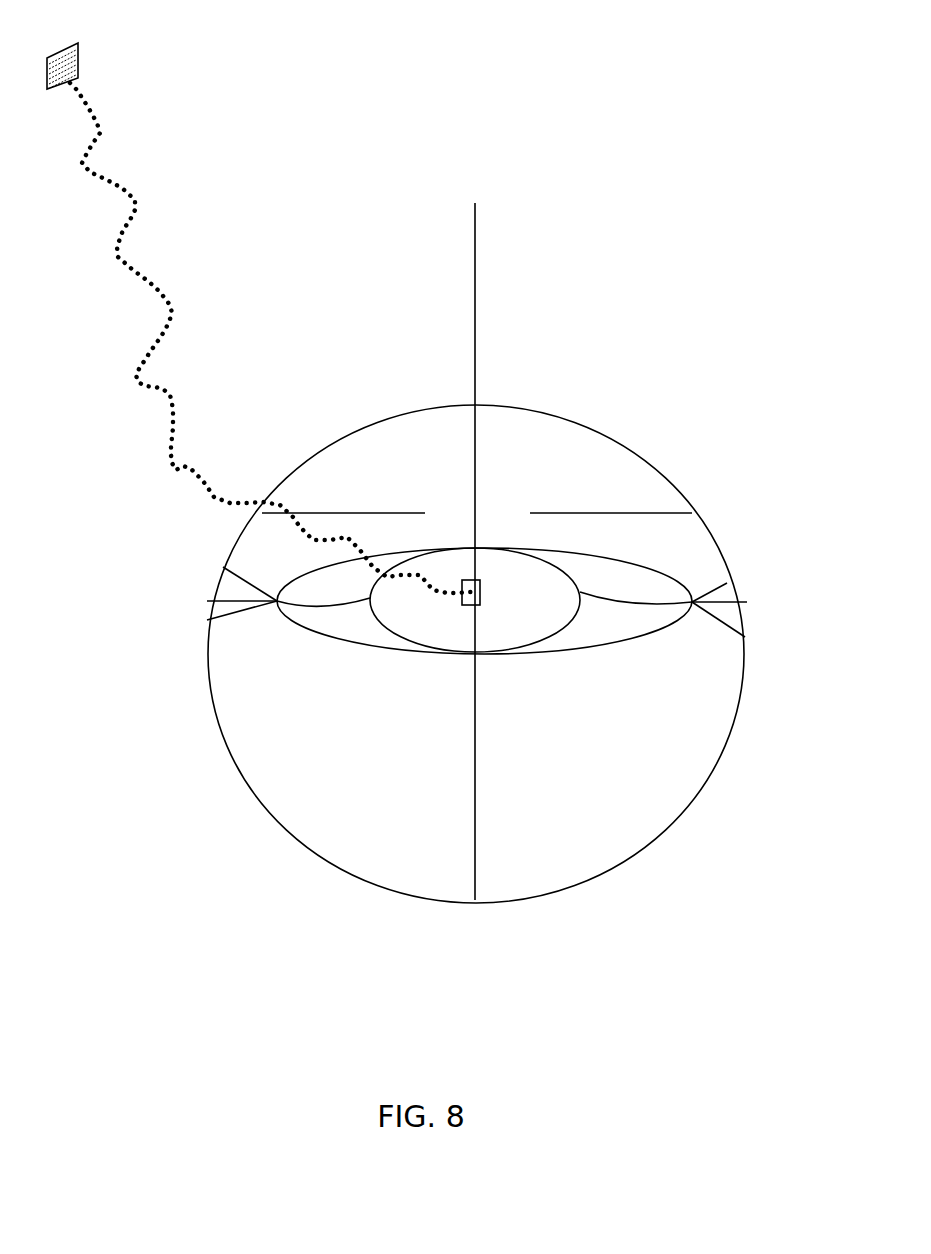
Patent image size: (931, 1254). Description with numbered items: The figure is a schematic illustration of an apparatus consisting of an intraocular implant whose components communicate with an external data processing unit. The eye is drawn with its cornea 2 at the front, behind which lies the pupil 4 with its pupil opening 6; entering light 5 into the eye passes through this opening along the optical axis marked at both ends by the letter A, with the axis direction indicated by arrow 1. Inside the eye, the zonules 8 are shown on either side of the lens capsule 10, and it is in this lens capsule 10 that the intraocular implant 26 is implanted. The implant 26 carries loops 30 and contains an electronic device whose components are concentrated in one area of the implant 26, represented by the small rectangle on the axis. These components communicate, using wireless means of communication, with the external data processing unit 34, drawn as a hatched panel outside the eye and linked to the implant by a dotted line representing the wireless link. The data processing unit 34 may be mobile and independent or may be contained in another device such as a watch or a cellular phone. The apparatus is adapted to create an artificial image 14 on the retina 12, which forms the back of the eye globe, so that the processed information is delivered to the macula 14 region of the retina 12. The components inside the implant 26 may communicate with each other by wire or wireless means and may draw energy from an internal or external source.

The incident light 1 is at (458, 177).
The cornea 2 is at (507, 418).
The pupil 4 is at (615, 513).
The entering light 5 is at (475, 273).
The pupil opening 6 is at (495, 515).
The zonules 8 is at (277, 601).
The lens capsule 10 is at (330, 627).
The retina 12 is at (465, 580).
The macula 14 is at (460, 903).
The intraocular implant 26 is at (510, 643).
The loops 30 is at (640, 595).
The external data processing unit 34 is at (78, 68).